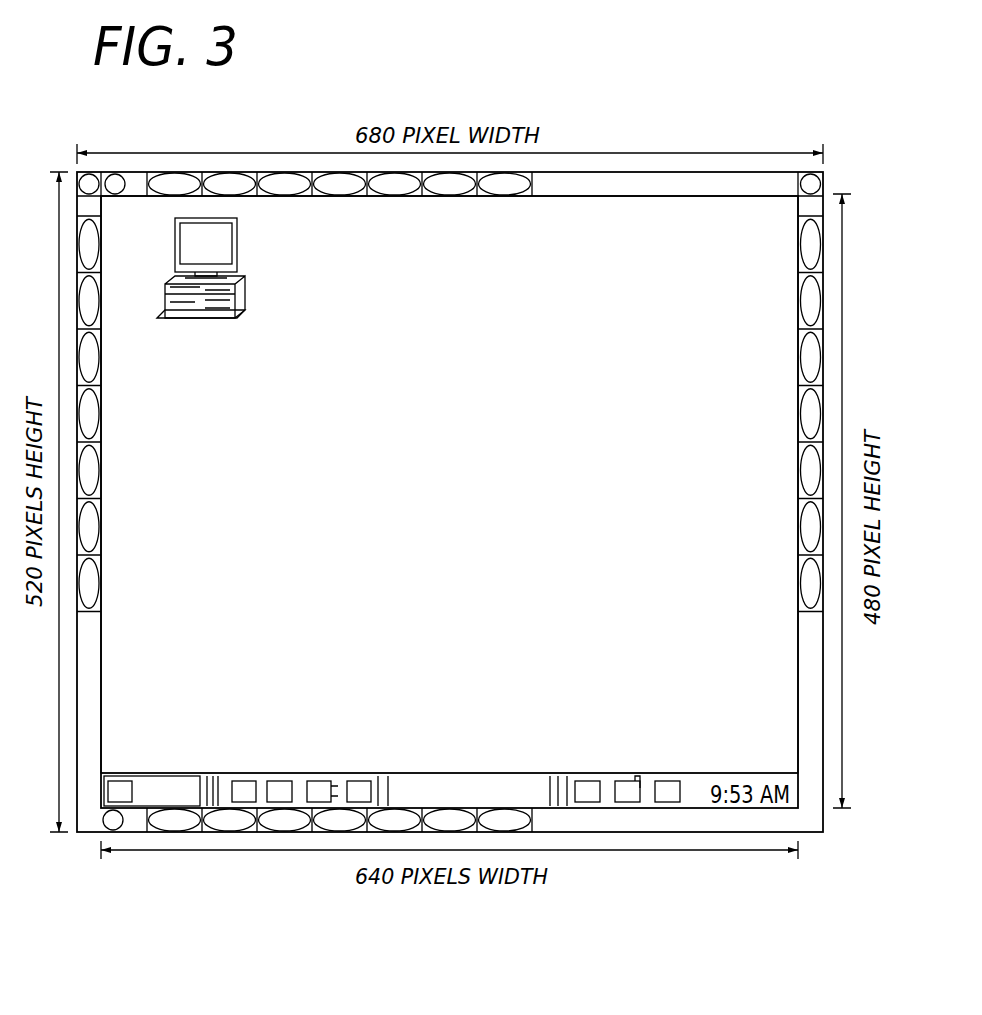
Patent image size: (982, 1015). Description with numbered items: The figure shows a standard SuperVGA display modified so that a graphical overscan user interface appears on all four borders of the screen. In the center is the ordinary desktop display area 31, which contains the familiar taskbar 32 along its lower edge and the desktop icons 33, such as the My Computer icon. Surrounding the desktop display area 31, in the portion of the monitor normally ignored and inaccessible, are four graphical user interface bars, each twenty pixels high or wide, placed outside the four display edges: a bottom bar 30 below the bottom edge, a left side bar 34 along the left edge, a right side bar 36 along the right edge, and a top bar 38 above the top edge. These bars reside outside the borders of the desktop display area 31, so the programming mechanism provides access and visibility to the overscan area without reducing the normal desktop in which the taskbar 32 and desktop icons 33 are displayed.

The bottom bar 30 is at (131, 823).
The desktop display area 31 is at (483, 753).
The taskbar 32 is at (163, 776).
The desktop icons 33 is at (258, 275).
The left side bar 34 is at (104, 362).
The right side bar 36 is at (797, 305).
The top bar 38 is at (364, 197).